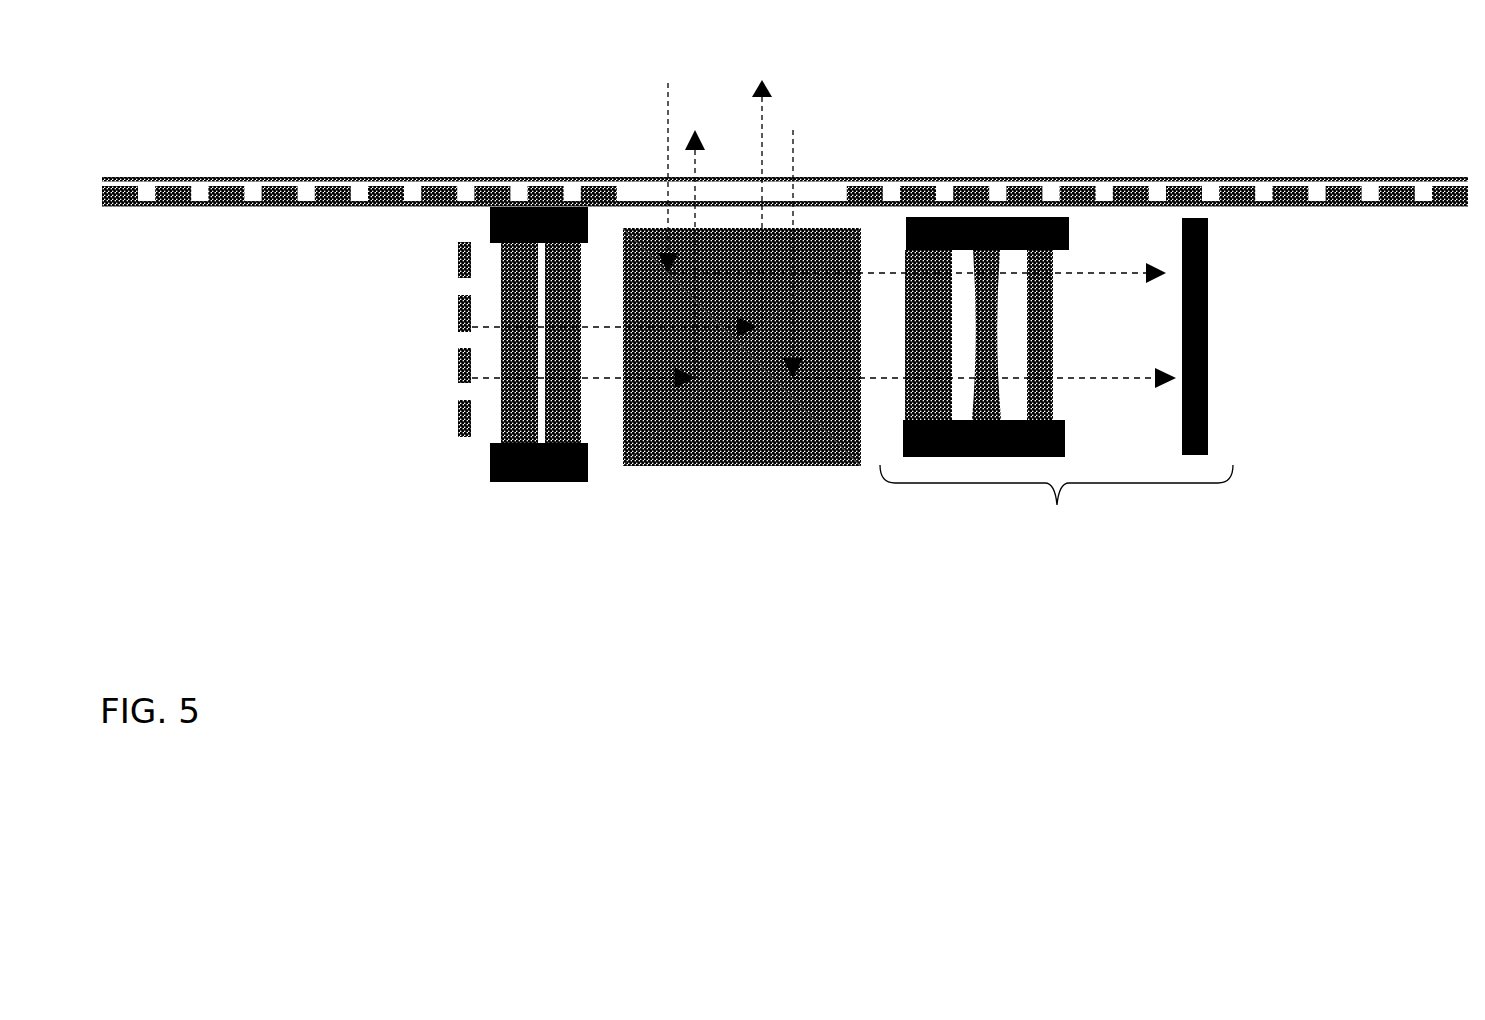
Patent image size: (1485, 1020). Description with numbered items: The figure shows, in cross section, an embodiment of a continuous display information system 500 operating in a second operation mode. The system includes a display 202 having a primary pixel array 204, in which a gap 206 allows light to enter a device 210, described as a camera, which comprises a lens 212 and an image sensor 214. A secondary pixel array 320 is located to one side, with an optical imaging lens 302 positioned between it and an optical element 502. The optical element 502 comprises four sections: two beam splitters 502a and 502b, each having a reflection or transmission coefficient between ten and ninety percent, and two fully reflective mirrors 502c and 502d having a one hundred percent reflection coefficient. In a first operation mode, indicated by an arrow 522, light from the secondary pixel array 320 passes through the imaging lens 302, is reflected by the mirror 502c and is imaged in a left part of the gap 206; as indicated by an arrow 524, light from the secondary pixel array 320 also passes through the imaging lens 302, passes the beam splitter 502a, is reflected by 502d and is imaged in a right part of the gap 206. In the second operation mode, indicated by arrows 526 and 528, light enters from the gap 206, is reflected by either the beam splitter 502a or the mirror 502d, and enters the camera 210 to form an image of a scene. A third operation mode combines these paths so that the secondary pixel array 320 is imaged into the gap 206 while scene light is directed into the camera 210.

The continuous display information system 500 is at (307, 82).
The display 202 is at (275, 178).
The primary pixel array 204 is at (387, 200).
The gap 206 is at (640, 192).
The optical imaging lens 302 is at (488, 456).
The secondary pixel array 320 is at (455, 370).
The optical element 502 is at (766, 391).
The beam splitter 502a is at (653, 258).
The beam splitter 502b is at (800, 290).
The fully reflective mirror 502c is at (683, 403).
The fully reflective mirror 502d is at (813, 417).
The arrow 522 is at (697, 125).
The arrow 524 is at (770, 90).
The arrow 526 is at (795, 138).
The arrow 528 is at (672, 97).
The lens 212 is at (824, 325).
The device 210 is at (1056, 386).
The image sensor 214 is at (1208, 352).